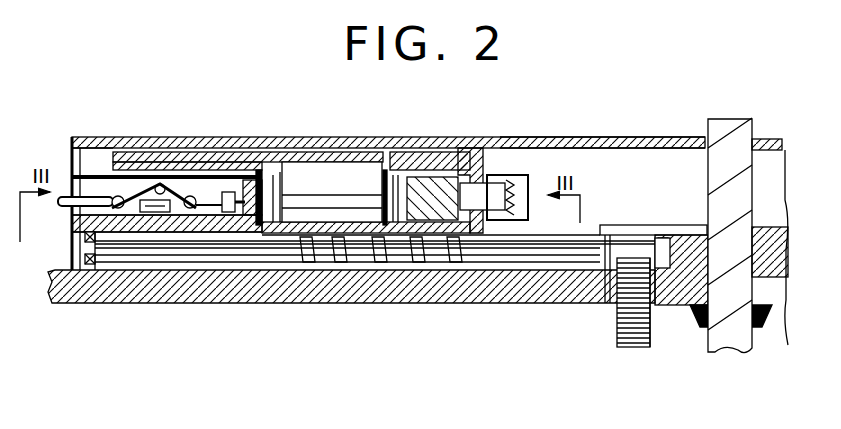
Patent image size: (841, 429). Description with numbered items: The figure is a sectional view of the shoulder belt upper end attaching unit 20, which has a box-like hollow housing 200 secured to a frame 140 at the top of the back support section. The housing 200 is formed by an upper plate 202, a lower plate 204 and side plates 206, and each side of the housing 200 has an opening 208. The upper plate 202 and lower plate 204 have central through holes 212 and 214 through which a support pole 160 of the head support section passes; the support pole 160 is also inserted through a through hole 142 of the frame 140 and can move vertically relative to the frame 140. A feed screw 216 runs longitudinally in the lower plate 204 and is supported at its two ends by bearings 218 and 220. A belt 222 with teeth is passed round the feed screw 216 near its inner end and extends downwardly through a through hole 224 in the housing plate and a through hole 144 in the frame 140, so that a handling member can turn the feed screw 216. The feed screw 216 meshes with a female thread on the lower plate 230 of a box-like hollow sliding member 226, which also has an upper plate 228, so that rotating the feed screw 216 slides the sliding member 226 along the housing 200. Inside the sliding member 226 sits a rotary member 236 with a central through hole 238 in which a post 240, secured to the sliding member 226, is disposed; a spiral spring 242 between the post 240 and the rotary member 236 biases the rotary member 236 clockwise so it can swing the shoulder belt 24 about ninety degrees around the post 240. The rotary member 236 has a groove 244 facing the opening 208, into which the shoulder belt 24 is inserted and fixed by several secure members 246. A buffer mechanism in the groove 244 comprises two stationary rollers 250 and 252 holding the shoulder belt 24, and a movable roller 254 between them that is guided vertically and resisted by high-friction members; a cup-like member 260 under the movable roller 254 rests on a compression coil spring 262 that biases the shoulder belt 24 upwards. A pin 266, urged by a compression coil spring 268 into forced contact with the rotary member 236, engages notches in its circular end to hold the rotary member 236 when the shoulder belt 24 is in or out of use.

The upper end attaching unit 20 is at (284, 137).
The shoulder belt 24 is at (66, 206).
The frame 140 is at (771, 330).
The through hole 142 is at (728, 352).
The through hole 144 is at (657, 305).
The support pole 160 is at (720, 128).
The housing 200 is at (315, 143).
The upper plate 202 is at (365, 143).
The lower plate 204 is at (310, 268).
The side plate 206 is at (572, 160).
The opening 208 is at (80, 158).
The through hole 212 is at (758, 140).
The through hole 214 is at (784, 320).
The feed screw 216 is at (552, 250).
The bearing 218 is at (90, 266).
The bearing 220 is at (670, 236).
The belt with teeth 222 is at (616, 338).
The through hole 224 is at (597, 268).
The sliding member 226 is at (415, 160).
The upper plate 228 is at (462, 152).
The lower plate 230 is at (427, 262).
The rotary member 236 is at (214, 216).
The through hole 238 is at (262, 232).
The post 240 is at (355, 212).
The spiral spring 242 is at (392, 240).
The groove 244 is at (94, 176).
The secure member 246 is at (230, 192).
The stationary roller 250 is at (118, 195).
The stationary roller 252 is at (192, 196).
The movable roller 254 is at (160, 184).
The cup-like member 260 is at (170, 233).
The compression coil spring 262 is at (142, 215).
The pin 266 is at (472, 233).
The compression coil spring 268 is at (505, 221).